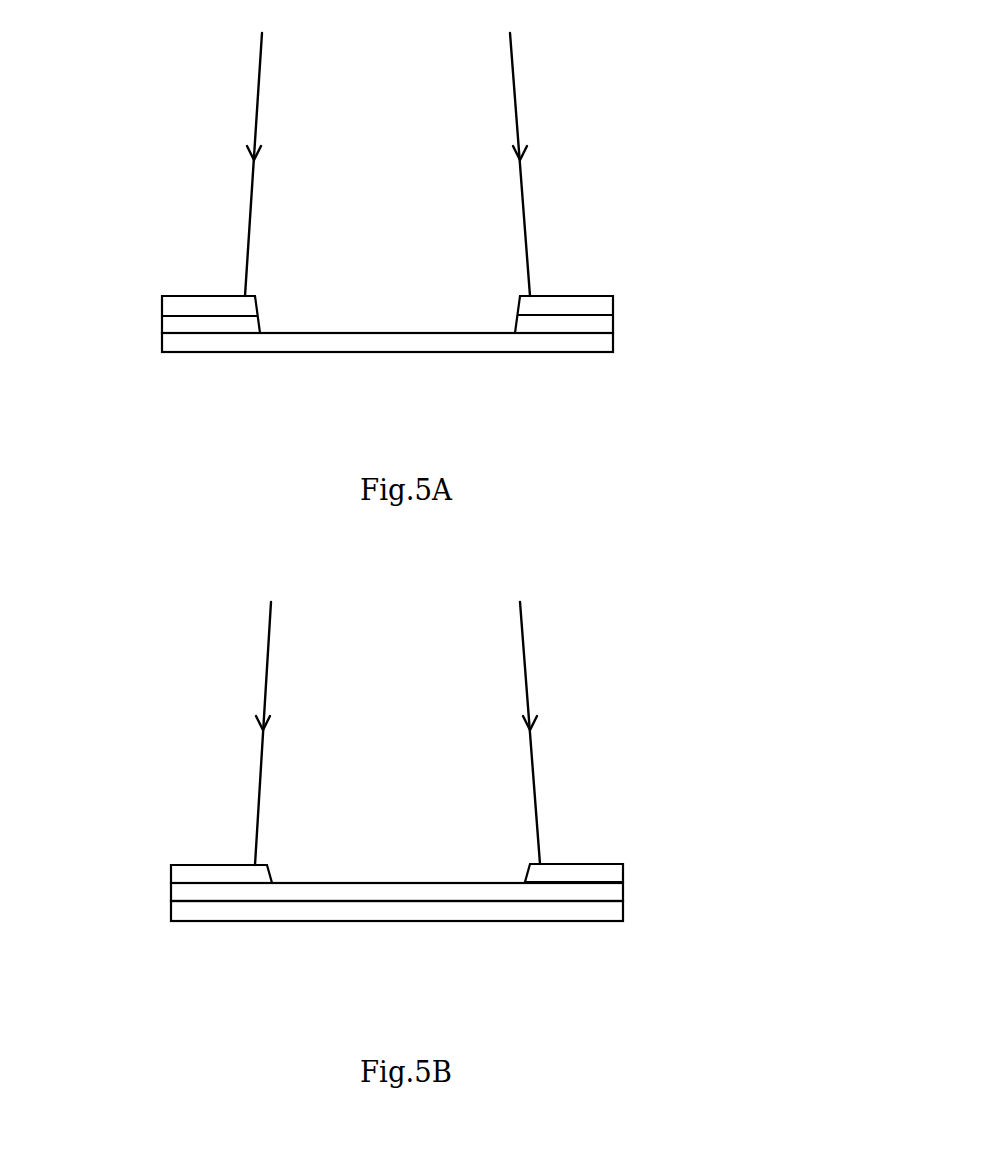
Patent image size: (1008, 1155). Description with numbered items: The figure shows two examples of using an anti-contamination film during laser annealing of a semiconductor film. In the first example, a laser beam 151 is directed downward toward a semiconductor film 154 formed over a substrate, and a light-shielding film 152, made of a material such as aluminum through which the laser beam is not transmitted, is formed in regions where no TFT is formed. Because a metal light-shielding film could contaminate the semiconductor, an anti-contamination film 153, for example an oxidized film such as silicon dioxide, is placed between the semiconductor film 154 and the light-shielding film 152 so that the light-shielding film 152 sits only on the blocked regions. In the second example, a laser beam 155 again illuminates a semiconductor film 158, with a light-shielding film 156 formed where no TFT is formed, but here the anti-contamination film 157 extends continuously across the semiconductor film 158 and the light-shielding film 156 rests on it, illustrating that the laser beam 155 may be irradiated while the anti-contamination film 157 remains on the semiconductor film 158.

In FIG. 5A, the laser beam 151 is at (515, 88).
In FIG. 5A, the light-shielding film 152 is at (178, 306).
In FIG. 5A, the anti-contamination film 153 is at (181, 330).
In FIG. 5A, the semiconductor film 154 is at (532, 342).
In FIG. 5B, the laser beam 155 is at (524, 640).
In FIG. 5B, the light-shielding film 156 is at (187, 873).
In FIG. 5B, the anti-contamination film 157 is at (193, 897).
In FIG. 5B, the semiconductor film 158 is at (542, 910).